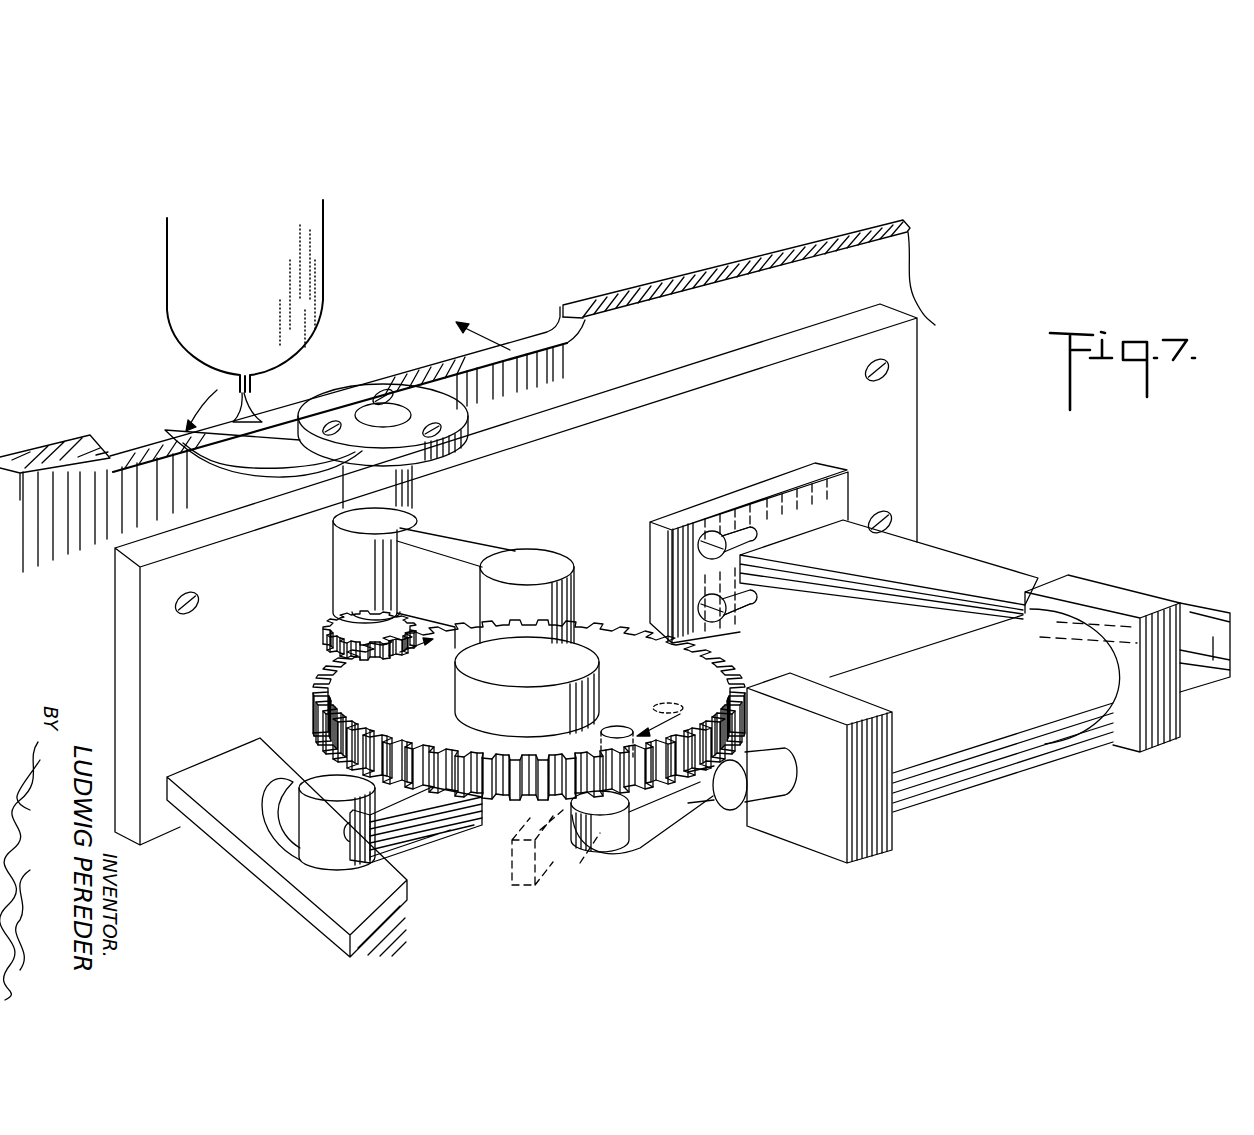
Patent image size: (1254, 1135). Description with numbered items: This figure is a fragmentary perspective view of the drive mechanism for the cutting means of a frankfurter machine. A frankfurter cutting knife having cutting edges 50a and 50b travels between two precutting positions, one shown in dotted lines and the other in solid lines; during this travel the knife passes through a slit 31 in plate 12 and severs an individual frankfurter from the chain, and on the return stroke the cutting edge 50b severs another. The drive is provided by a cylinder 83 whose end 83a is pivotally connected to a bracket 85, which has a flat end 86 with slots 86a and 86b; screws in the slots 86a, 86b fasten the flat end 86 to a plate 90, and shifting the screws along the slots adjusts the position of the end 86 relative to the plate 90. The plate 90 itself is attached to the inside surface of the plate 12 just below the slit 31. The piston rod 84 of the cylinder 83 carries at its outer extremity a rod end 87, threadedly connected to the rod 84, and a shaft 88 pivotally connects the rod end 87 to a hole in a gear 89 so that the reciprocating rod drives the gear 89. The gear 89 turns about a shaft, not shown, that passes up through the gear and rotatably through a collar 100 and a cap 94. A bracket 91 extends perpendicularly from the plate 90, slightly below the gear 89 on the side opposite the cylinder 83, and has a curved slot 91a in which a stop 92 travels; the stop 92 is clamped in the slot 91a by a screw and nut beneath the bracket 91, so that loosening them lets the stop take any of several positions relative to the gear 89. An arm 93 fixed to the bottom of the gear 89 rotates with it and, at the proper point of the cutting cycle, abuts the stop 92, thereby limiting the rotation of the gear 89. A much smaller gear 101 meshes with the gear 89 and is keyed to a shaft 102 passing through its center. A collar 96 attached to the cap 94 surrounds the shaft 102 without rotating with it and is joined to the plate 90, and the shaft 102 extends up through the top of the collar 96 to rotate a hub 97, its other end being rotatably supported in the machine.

The plate 12 is at (815, 235).
The slit 31 is at (545, 337).
The cutting edge 50a is at (230, 470).
The cutting edge 50b is at (263, 437).
The cylinder 83 is at (1008, 760).
The cylinder end 83a is at (1163, 733).
The piston rod 84 is at (773, 802).
The bracket 85 is at (998, 573).
The flat end 86 is at (847, 500).
The slot 86a is at (737, 528).
The slot 86b is at (747, 593).
The rod end 87 is at (633, 842).
The shaft 88 is at (613, 813).
The gear 89 is at (500, 800).
The plate 90 is at (908, 407).
The bracket 91 is at (212, 772).
The curved slot 91a is at (283, 778).
The stop 92 is at (313, 848).
The arm 93 is at (403, 847).
The cap 94 is at (567, 612).
The collar 96 is at (427, 520).
The hub 97 is at (348, 392).
The collar 100 is at (600, 676).
The gear 101 is at (325, 643).
The shaft 102 is at (325, 612).